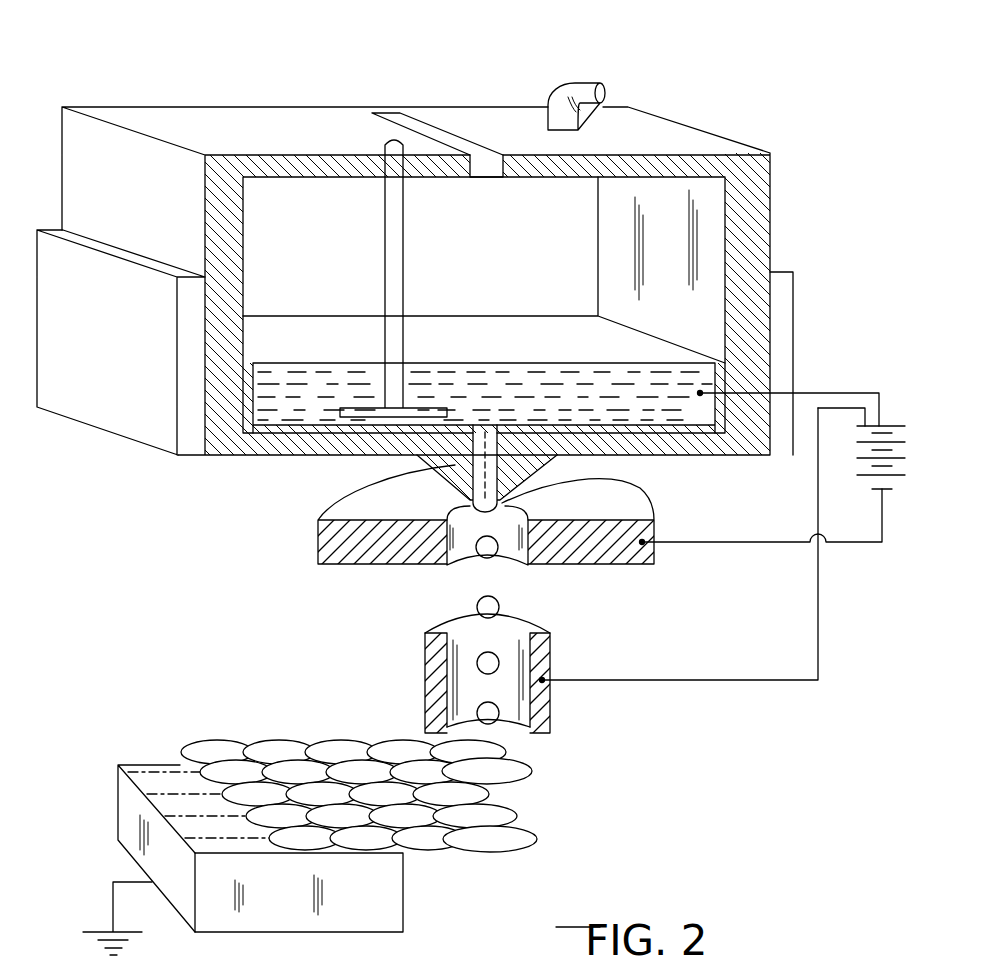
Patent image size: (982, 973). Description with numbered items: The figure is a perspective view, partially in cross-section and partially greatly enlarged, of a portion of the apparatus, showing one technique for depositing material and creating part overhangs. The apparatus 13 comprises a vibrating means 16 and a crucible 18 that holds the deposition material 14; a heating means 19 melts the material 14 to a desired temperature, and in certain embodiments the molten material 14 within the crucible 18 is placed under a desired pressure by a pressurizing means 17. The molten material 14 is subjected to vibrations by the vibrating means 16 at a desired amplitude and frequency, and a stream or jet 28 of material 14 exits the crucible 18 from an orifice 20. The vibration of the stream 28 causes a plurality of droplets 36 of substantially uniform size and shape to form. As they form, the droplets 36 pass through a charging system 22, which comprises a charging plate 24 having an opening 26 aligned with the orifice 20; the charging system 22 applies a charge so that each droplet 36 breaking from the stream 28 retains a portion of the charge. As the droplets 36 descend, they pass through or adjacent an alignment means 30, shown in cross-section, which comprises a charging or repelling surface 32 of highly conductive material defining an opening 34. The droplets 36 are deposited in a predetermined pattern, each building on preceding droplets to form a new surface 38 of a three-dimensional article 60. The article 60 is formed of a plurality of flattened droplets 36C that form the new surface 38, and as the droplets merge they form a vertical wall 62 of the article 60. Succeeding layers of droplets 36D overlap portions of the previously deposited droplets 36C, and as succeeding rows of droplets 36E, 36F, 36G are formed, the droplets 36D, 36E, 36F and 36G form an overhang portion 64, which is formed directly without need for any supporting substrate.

The apparatus 13 is at (145, 80).
The deposition material 14 is at (302, 335).
The vibrating means 16 is at (404, 232).
The pressurizing means 17 is at (587, 80).
The crucible 18 is at (772, 246).
The heating means 19 is at (86, 285).
The orifice 20 is at (488, 440).
The charging system 22 is at (570, 473).
The charging plate 24 is at (617, 557).
The opening 26 is at (458, 515).
The stream 28 is at (503, 503).
The alignment means 30 is at (581, 570).
The repelling surface 32 is at (530, 667).
The opening 34 is at (515, 637).
The droplets 36 is at (475, 597).
The flattened droplets 36C is at (155, 777).
The succeeding layer of droplets 36D is at (208, 750).
The succeeding row of droplets 36E is at (285, 750).
The succeeding row of droplets 36F is at (343, 745).
The succeeding row of droplets 36G is at (420, 745).
The new surface 38 is at (351, 750).
The three-dimensional article 60 is at (266, 851).
The vertical wall 62 is at (404, 895).
The overhang portion 64 is at (503, 850).